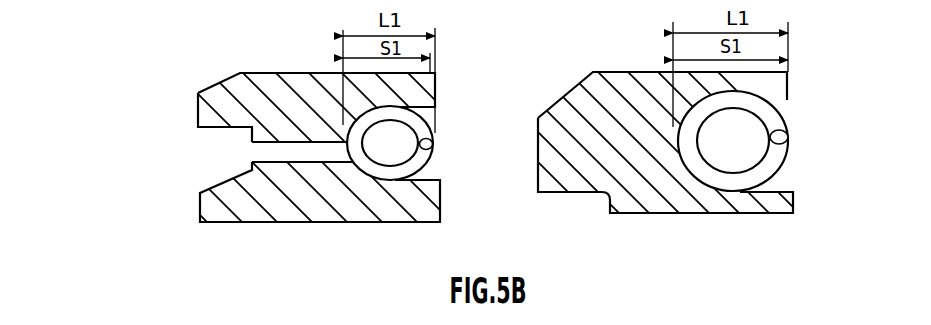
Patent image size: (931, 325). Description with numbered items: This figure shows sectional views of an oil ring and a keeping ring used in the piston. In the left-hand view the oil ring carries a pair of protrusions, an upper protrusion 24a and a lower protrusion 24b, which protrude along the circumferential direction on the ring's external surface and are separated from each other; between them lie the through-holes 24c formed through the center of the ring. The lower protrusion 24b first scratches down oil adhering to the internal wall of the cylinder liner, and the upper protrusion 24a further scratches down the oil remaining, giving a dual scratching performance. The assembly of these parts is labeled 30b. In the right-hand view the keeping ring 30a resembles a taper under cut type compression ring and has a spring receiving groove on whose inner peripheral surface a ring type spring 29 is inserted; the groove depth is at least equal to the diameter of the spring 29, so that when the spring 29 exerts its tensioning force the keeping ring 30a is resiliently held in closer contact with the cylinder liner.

The upper protrusion 24a is at (200, 107).
The lower protrusion 24b is at (207, 190).
The through-holes 24c is at (277, 148).
The ring type spring 29 is at (432, 162).
The keeping ring 30a is at (582, 92).
The two-piece holder 30b is at (304, 132).